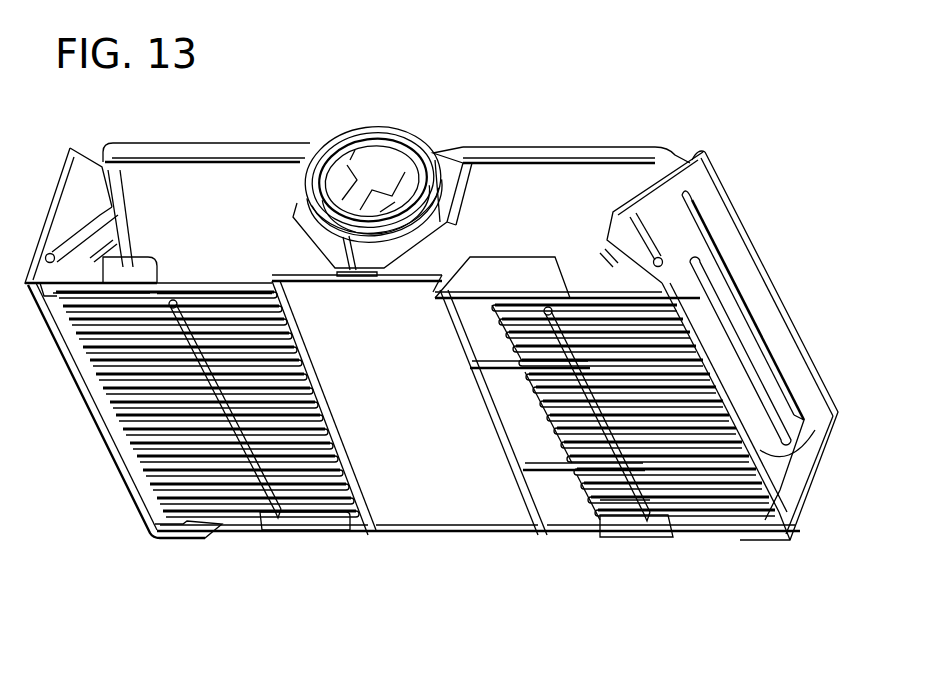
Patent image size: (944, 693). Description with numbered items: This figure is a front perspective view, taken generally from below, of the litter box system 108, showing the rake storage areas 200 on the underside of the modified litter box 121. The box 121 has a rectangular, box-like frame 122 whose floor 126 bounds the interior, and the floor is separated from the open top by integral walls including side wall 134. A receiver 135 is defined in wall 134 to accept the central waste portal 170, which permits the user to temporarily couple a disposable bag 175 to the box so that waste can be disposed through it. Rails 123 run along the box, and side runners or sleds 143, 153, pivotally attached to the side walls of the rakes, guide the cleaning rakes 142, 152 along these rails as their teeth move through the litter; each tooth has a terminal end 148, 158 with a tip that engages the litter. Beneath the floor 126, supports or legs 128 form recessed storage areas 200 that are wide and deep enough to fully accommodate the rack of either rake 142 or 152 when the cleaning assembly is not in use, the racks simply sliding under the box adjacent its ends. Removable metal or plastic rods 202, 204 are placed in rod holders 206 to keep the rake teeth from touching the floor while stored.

The system 108 is at (514, 95).
The litter box 121 is at (214, 140).
The frame 122 is at (622, 147).
The rails 123 is at (545, 145).
The floor 126 is at (417, 460).
The feet 128 is at (278, 283).
The wall 134 is at (170, 188).
The receiver 135 is at (475, 185).
The cleaning rake 142 is at (780, 208).
The side runner 143 is at (565, 262).
The terminal end 148 is at (598, 548).
The cleaning rake 152 is at (200, 555).
The side runner 153 is at (130, 252).
The terminal end 158 is at (306, 512).
The waste portal 170 is at (341, 123).
The disposable bag 175 is at (373, 150).
The storage areas 200 is at (86, 488).
The rod 202 is at (553, 358).
The rod 204 is at (282, 463).
The rod holders 206 is at (212, 300).